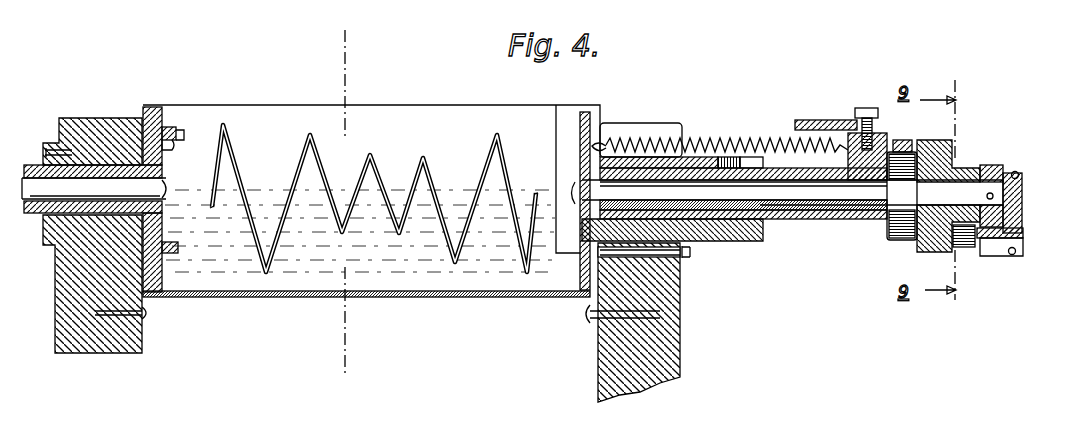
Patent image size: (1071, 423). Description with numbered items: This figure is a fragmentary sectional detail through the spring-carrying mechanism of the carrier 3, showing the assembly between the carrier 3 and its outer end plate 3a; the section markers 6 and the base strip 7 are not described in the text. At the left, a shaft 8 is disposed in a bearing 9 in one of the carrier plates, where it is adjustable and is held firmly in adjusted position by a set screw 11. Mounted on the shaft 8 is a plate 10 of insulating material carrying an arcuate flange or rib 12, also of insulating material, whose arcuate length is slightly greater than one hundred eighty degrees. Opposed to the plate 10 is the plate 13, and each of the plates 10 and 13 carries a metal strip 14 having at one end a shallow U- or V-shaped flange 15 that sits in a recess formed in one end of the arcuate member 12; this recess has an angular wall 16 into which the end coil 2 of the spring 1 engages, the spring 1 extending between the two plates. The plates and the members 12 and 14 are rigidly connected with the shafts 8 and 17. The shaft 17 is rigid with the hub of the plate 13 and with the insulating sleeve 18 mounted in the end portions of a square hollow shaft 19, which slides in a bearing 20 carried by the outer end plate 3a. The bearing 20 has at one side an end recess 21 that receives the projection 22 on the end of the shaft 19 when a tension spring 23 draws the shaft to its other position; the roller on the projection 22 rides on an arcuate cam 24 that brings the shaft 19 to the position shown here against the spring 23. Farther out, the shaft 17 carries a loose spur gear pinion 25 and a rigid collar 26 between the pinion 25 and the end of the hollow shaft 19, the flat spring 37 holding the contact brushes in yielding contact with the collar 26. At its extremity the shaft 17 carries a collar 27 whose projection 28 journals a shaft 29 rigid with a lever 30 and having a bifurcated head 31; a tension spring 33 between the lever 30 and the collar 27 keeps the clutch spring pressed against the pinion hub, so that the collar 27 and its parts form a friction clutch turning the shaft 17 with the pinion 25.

The spring 1 is at (433, 182).
The end coil 2 is at (212, 178).
The carrier 3 is at (104, 354).
The outer end plate 3a is at (684, 346).
The section line 6 is at (347, 44).
The bottom strip 7 is at (408, 298).
The shaft 8 is at (40, 188).
The bearing 9 is at (52, 225).
The plate of insulating material 10 is at (155, 105).
The set screw 11 is at (46, 162).
The arcuate flange or rib 12 is at (168, 126).
The plate 13 is at (584, 110).
The metal strip 14 is at (166, 144).
The U- or V-shaped flange 15 is at (180, 134).
The angular wall 16 is at (592, 145).
The shaft 17 is at (793, 195).
The insulating sleeve 18 is at (826, 212).
The square hollow shaft 19 is at (860, 222).
The bearing 20 is at (716, 243).
The end recess 21 is at (745, 163).
The projection 22 is at (876, 150).
The tension spring 23 is at (782, 138).
The arcuate cam 24 is at (832, 97).
The spur gear pinion 25 is at (953, 166).
The collar 26 is at (898, 242).
The collar 27 is at (995, 166).
The projection 28 is at (1000, 256).
The shaft 29 is at (1023, 236).
The lever 30 is at (1022, 212).
The bifurcated head 31 is at (968, 248).
The tension spring 33 is at (1020, 180).
The flat spring 37 is at (905, 140).